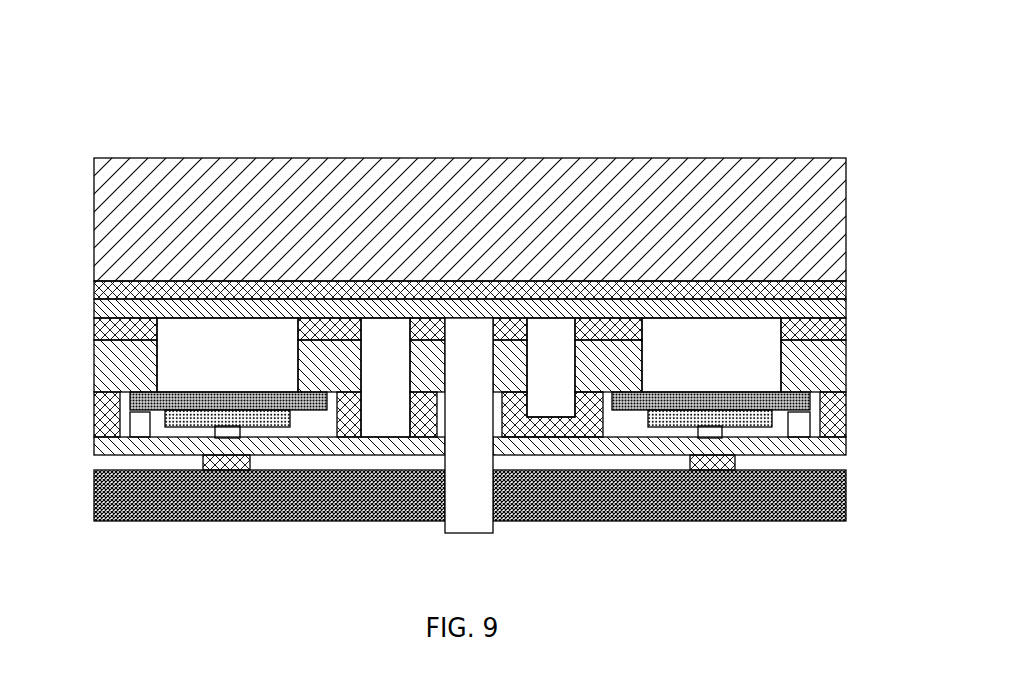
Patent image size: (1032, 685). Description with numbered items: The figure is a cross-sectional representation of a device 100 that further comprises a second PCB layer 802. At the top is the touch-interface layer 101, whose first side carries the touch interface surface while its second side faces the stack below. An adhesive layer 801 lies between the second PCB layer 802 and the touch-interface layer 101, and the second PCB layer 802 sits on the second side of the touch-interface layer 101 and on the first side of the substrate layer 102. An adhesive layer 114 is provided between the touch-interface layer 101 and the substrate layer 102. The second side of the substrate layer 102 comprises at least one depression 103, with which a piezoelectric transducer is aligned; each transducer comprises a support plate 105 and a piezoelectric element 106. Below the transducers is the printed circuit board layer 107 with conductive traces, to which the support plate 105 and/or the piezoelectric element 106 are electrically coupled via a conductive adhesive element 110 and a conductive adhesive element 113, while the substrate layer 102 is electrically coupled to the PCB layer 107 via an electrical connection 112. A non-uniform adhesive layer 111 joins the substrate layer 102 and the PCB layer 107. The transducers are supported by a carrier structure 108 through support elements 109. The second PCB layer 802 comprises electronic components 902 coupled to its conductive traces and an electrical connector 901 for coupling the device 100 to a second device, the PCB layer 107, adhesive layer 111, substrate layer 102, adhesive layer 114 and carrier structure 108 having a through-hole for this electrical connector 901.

The device 100 is at (123, 101).
The touch-interface layer 101 is at (99, 243).
The substrate layer 102 is at (99, 363).
The depression 103 is at (773, 366).
The support plate 105 is at (812, 396).
The piezoelectric element 106 is at (772, 418).
The printed circuit board (PCB) layer 107 is at (97, 457).
The carrier structure 108 is at (99, 502).
The support element 109 is at (217, 468).
The conductive adhesive element 110 is at (233, 437).
The adhesive layer 111 is at (99, 405).
The electrical connection 112 is at (383, 434).
The conductive adhesive element 113 is at (135, 418).
The adhesive layer 114 is at (99, 333).
The adhesive layer 801 is at (846, 291).
The second PCB layer 802 is at (846, 312).
The electrical connector 901 is at (470, 533).
The electronic components 902 is at (557, 418).